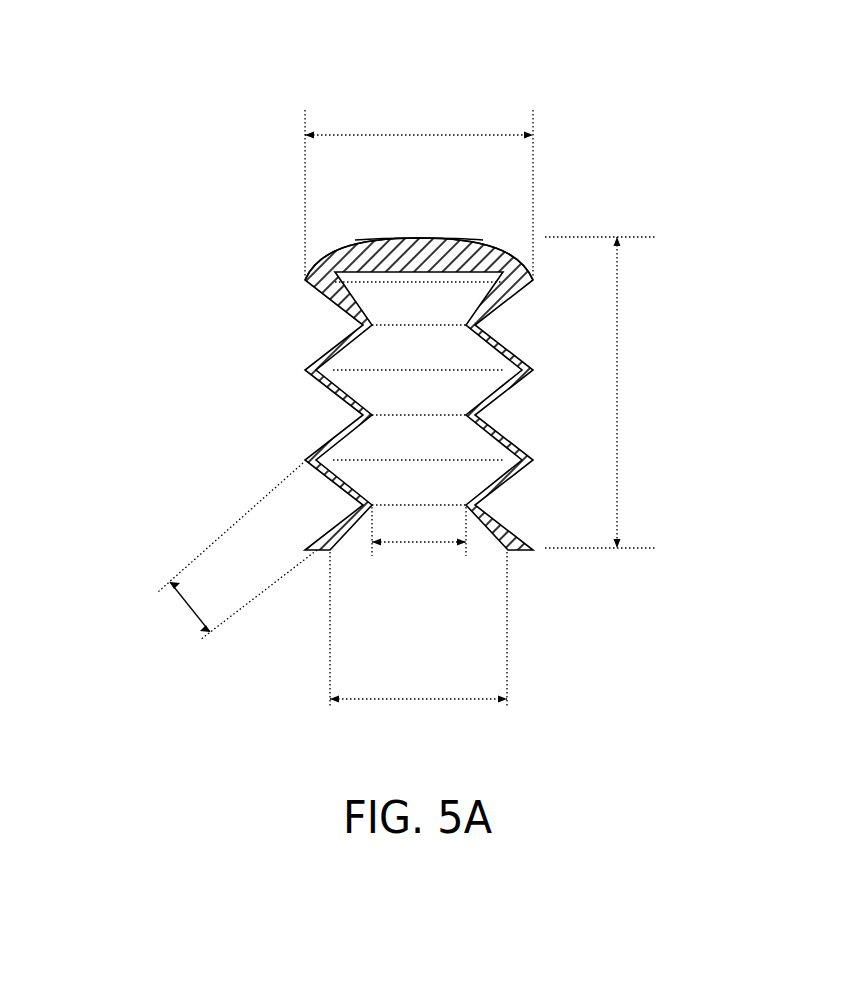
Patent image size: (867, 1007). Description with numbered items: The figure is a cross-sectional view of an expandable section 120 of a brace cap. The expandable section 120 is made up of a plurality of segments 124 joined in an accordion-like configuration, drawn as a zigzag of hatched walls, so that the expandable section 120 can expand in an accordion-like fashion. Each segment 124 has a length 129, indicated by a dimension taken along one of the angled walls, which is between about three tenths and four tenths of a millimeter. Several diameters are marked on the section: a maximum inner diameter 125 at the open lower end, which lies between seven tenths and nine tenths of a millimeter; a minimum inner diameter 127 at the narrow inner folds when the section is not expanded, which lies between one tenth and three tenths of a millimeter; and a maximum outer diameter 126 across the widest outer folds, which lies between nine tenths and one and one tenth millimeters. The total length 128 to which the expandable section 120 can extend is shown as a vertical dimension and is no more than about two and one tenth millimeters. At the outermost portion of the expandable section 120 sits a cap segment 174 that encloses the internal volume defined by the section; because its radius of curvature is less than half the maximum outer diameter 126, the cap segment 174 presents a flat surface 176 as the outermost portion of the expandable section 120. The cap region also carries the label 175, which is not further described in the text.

The expandable section 120 is at (374, 396).
The segment 124 is at (320, 383).
The maximum inner diameter 125 is at (410, 700).
The maximum outer diameter 126 is at (425, 132).
The minimum inner diameter 127 is at (420, 543).
The total length 128 is at (617, 335).
The length 129 is at (185, 612).
The cap segment 174 is at (505, 243).
The cap side 175 is at (343, 243).
The flat surface 176 is at (433, 243).